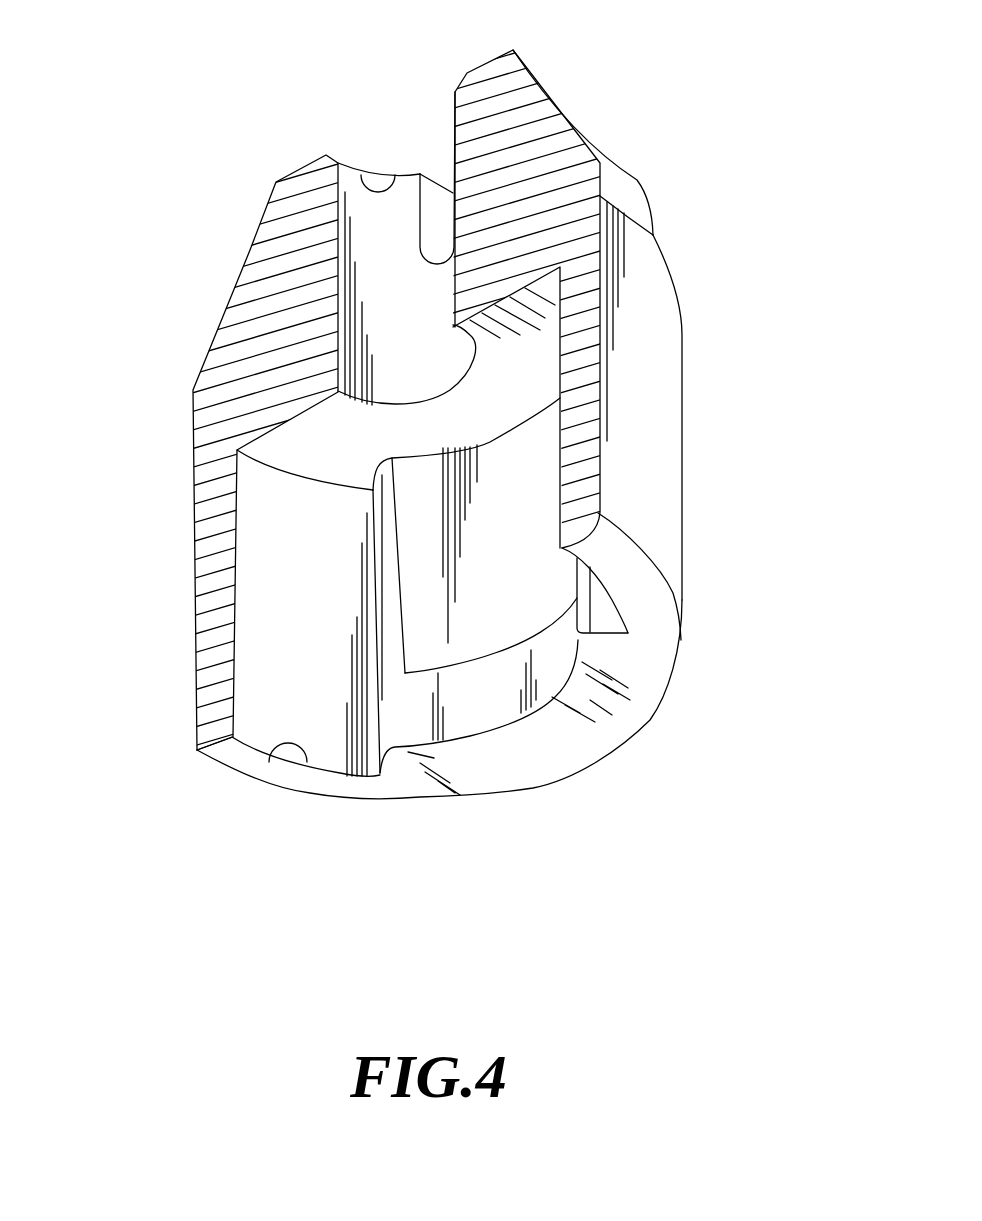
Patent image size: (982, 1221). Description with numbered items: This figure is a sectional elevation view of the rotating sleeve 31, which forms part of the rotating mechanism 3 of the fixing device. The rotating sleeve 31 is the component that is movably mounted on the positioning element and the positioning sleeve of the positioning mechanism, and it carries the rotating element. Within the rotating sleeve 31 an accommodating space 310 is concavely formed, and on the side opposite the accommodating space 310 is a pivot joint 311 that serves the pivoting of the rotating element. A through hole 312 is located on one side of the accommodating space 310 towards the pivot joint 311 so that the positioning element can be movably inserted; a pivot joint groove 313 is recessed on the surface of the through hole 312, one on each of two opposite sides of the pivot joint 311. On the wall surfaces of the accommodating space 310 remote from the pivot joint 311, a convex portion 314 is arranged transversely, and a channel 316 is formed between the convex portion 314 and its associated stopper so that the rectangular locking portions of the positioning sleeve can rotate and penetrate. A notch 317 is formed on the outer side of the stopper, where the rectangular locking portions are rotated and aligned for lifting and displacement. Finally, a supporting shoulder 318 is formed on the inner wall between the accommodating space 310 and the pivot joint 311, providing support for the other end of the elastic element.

The rotating mechanism 3 is at (784, 556).
The rotating sleeve 31 is at (699, 533).
The accommodating space 310 is at (280, 517).
The pivot joint 311 is at (520, 98).
The through hole 312 is at (362, 174).
The pivot joint groove 313 is at (440, 203).
The convex portion 314 is at (490, 707).
The channel 316 is at (528, 518).
The notch 317 is at (307, 762).
The supporting shoulder 318 is at (305, 438).